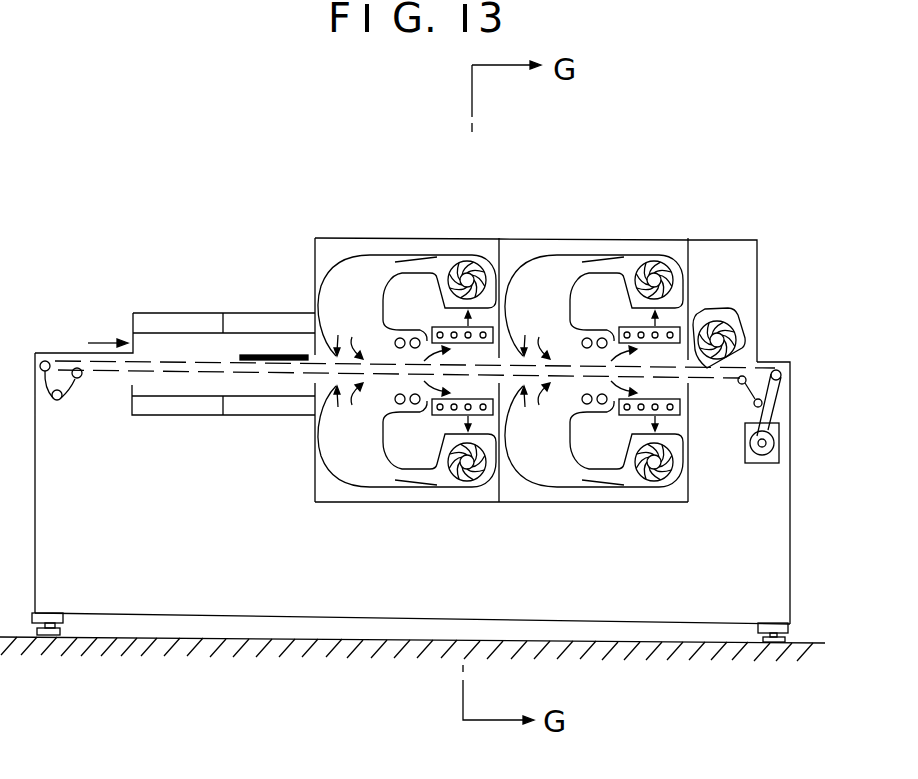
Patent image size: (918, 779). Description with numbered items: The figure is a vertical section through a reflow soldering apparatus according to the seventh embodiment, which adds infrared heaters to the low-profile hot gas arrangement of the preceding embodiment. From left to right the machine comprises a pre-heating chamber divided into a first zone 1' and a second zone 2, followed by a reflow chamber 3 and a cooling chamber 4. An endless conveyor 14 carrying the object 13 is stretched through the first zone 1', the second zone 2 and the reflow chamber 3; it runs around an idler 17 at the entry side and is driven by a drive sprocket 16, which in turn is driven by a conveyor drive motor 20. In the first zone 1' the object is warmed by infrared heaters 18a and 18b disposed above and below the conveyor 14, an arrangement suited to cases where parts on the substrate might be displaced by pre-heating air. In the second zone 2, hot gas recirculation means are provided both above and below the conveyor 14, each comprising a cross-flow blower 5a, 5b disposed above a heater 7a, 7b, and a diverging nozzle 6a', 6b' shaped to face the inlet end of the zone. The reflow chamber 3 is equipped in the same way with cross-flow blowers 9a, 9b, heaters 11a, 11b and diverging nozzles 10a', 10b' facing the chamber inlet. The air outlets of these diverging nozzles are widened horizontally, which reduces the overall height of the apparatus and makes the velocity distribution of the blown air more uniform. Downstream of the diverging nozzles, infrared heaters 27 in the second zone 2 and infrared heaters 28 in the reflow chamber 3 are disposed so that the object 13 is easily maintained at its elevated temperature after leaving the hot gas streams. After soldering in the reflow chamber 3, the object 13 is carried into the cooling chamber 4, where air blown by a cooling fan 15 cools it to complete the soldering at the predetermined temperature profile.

The first zone of the pre-heating chamber 1' is at (178, 291).
The second zone of the pre-heating chamber 2 is at (405, 238).
The reflow chamber 3 is at (640, 240).
The cooling chamber 4 is at (735, 240).
The cross-flow blower 5a is at (472, 255).
The cross-flow blower 5b is at (475, 490).
The diverging nozzle 6a' is at (407, 261).
The diverging nozzle 6b' is at (388, 476).
The heater 7a is at (497, 325).
The heater 7b is at (427, 402).
The cross-flow blower 9a is at (663, 255).
The cross-flow blower 9b is at (670, 490).
The diverging nozzle 10a' is at (594, 259).
The diverging nozzle 10b' is at (594, 476).
The heater 11a is at (685, 327).
The heater 11b is at (610, 415).
The object 13 is at (285, 355).
The endless conveyor 14 is at (81, 342).
The cooling fan 15 is at (745, 320).
The drive sprocket 16 is at (795, 363).
The idler 17 is at (45, 361).
The infrared heater 18a is at (235, 333).
The infrared heater 18b is at (253, 406).
The conveyor drive motor 20 is at (791, 474).
The infrared heater 27 is at (396, 339).
The infrared heater 28 is at (583, 339).